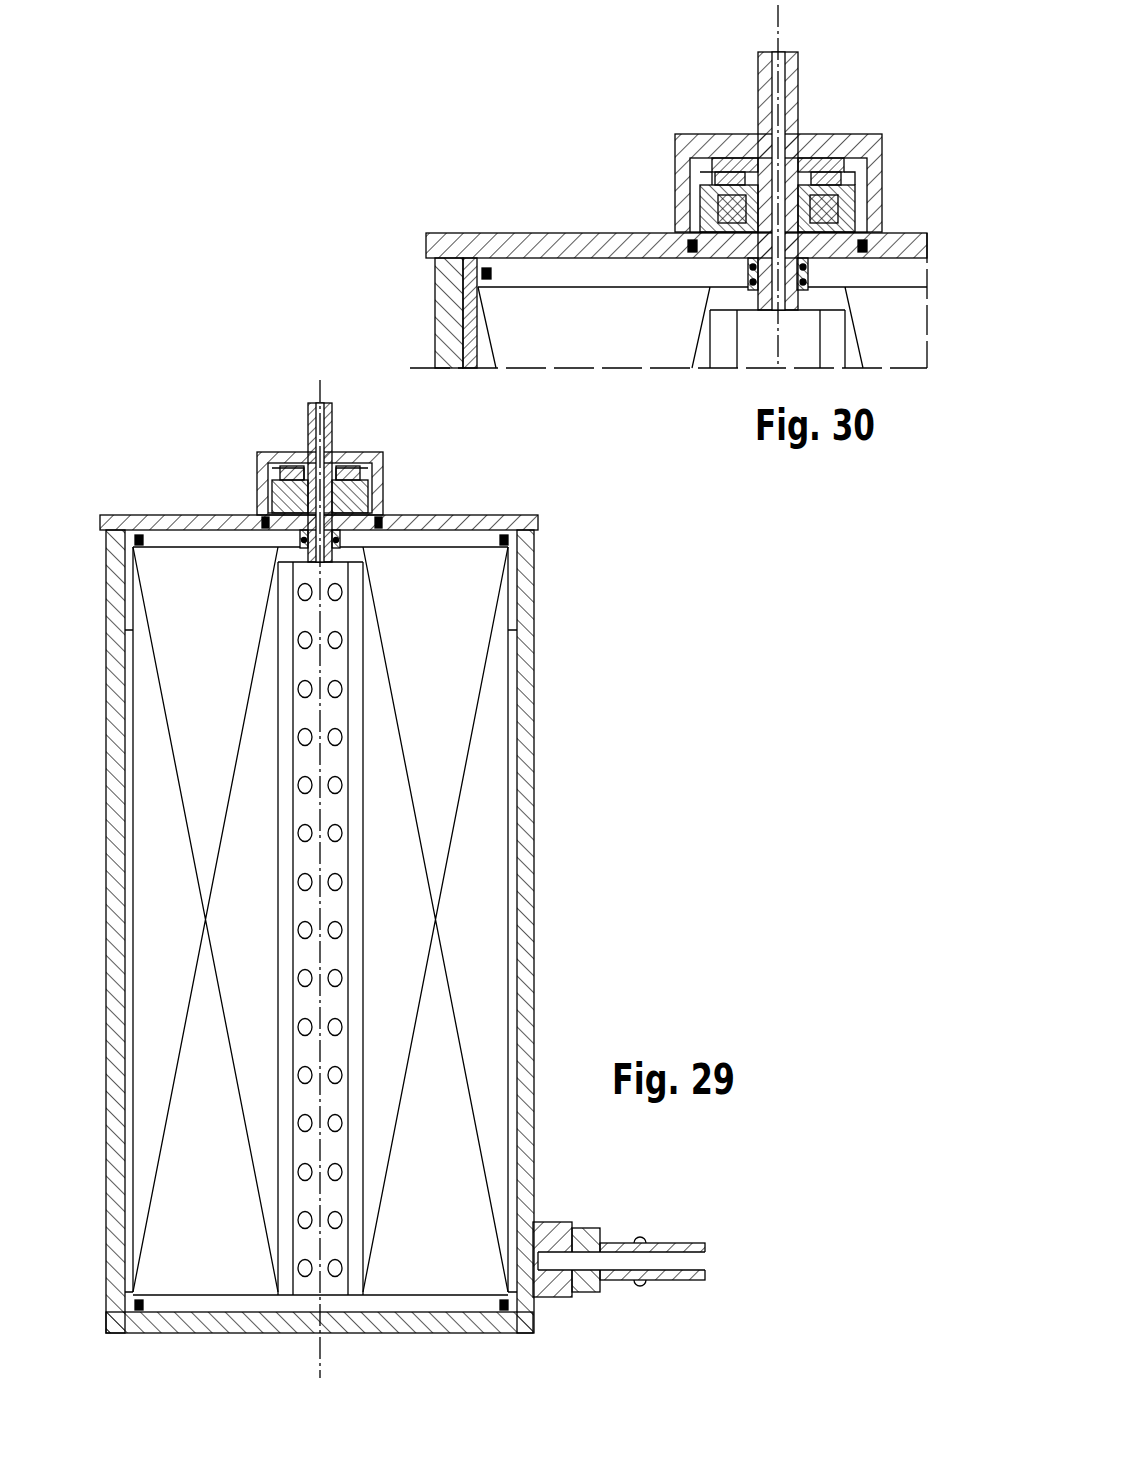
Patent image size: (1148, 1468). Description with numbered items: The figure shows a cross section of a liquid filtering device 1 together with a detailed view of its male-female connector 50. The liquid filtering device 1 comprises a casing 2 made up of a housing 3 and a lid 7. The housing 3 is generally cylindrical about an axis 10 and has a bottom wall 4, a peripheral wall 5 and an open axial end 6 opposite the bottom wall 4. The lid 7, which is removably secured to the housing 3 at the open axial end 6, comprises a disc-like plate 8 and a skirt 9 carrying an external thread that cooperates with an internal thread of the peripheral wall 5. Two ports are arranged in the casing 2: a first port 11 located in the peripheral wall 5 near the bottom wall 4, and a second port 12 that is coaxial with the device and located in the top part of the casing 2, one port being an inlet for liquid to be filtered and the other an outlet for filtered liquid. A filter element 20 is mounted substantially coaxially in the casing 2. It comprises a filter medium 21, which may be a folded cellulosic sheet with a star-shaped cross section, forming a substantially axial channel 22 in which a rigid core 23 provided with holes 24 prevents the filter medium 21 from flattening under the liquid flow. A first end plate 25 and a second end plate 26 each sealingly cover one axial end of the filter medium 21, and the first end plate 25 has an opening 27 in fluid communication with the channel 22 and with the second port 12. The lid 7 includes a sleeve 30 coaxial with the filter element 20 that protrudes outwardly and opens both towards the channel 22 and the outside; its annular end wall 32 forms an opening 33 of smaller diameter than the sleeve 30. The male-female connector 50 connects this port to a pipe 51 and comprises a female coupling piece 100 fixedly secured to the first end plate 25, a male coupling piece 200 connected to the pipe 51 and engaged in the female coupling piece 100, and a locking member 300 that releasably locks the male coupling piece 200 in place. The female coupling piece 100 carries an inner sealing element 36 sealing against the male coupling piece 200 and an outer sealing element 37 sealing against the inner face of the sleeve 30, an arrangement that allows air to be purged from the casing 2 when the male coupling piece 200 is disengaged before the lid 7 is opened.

In FIG. 29, the liquid filtering device 1 is at (616, 877).
In FIG. 29, the casing 2 is at (97, 1026).
In FIG. 30, the casing 2 is at (445, 310).
In FIG. 29, the housing 3 is at (530, 1033).
In FIG. 29, the bottom wall 4 is at (200, 1322).
In FIG. 29, the peripheral wall 5 is at (114, 1166).
In FIG. 29, the open axial end 6 is at (165, 510).
In FIG. 29, the lid 7 is at (538, 498).
In FIG. 30, the lid 7 is at (456, 243).
In FIG. 29, the disc-like plate 8 is at (490, 515).
In FIG. 29, the skirt 9 is at (515, 597).
In FIG. 29, the axis 10 is at (322, 1378).
In FIG. 30, the axis 10 is at (778, 14).
In FIG. 29, the first port 11 is at (532, 1236).
In FIG. 29, the second port 12 is at (350, 452).
In FIG. 29, the filter element 20 is at (480, 922).
In FIG. 29, the filter medium 21 is at (482, 1080).
In FIG. 29, the channel 22 is at (333, 810).
In FIG. 29, the rigid core 23 is at (355, 712).
In FIG. 29, the holes 24 is at (342, 880).
In FIG. 29, the first end plate 25 is at (400, 540).
In FIG. 30, the first end plate 25 is at (576, 285).
In FIG. 29, the second end plate 26 is at (446, 1303).
In FIG. 30, the opening 27 is at (742, 270).
In FIG. 29, the sleeve 30 is at (260, 498).
In FIG. 30, the sleeve 30 is at (878, 170).
In FIG. 29, the annular end wall 32 is at (263, 455).
In FIG. 30, the annular end wall 32 is at (697, 134).
In FIG. 29, the opening 33 is at (292, 452).
In FIG. 30, the opening 33 is at (736, 134).
In FIG. 30, the inner sealing element 36 is at (806, 284).
In FIG. 30, the outer sealing element 37 is at (870, 244).
In FIG. 29, the male-female connector 50 is at (290, 402).
In FIG. 30, the male-female connector 50 is at (852, 110).
In FIG. 30, the pipe 51 is at (793, 72).
In FIG. 29, the female coupling piece 100 is at (352, 466).
In FIG. 30, the female coupling piece 100 is at (718, 178).
In FIG. 29, the male coupling piece 200 is at (340, 410).
In FIG. 30, the male coupling piece 200 is at (810, 108).
In FIG. 29, the locking member 300 is at (370, 495).
In FIG. 30, the locking member 300 is at (730, 212).